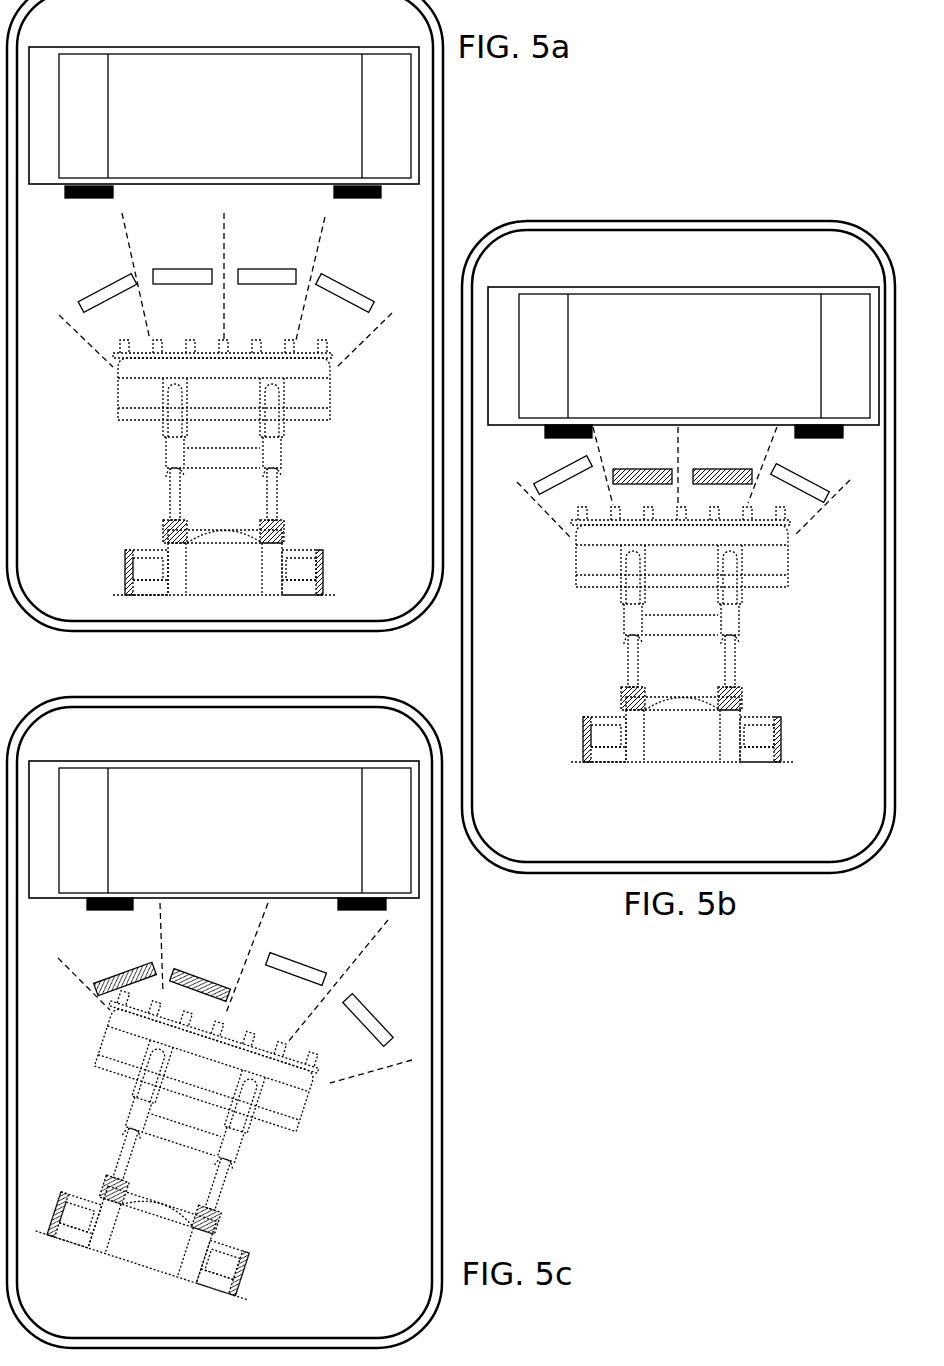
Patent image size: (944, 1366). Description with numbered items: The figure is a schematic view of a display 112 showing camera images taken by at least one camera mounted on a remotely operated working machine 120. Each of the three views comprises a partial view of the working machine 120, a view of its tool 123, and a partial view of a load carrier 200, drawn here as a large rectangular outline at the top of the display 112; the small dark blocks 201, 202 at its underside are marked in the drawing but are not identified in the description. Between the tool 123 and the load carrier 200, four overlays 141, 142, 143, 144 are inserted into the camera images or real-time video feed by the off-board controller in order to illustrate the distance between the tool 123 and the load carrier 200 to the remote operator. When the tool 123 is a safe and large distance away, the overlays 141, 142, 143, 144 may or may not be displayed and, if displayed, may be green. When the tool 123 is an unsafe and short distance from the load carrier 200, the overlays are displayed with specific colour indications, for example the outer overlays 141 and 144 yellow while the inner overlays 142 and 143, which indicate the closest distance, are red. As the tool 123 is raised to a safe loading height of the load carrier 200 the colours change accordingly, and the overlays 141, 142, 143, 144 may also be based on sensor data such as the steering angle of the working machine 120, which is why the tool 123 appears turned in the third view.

In FIG. 5a, the display 112 is at (448, 210).
In FIG. 5b, the display 112 is at (732, 220).
In FIG. 5c, the display 112 is at (443, 1012).
In FIG. 5a, the load carrier 200 is at (245, 47).
In FIG. 5b, the load carrier 200 is at (722, 286).
In FIG. 5c, the load carrier 200 is at (231, 760).
In FIG. 5a, the first camera 201 is at (107, 185).
In FIG. 5b, the first camera 201 is at (577, 423).
In FIG. 5c, the first camera 201 is at (120, 898).
In FIG. 5a, the second camera 202 is at (343, 184).
In FIG. 5b, the second camera 202 is at (815, 423).
In FIG. 5c, the second camera 202 is at (358, 898).
In FIG. 5a, the overlay 141 is at (107, 285).
In FIG. 5b, the overlay 141 is at (552, 472).
In FIG. 5c, the overlay 141 is at (125, 970).
In FIG. 5a, the overlay 142 is at (203, 268).
In FIG. 5b, the overlay 142 is at (662, 468).
In FIG. 5c, the overlay 142 is at (192, 973).
In FIG. 5a, the overlay 143 is at (288, 268).
In FIG. 5b, the overlay 143 is at (743, 468).
In FIG. 5c, the overlay 143 is at (292, 958).
In FIG. 5a, the overlay 144 is at (343, 290).
In FIG. 5b, the overlay 144 is at (802, 478).
In FIG. 5c, the overlay 144 is at (375, 1015).
In FIG. 5a, the tool 123 is at (207, 406).
In FIG. 5b, the tool 123 is at (661, 571).
In FIG. 5c, the tool 123 is at (191, 1084).
In FIG. 5a, the working machine 120 is at (206, 576).
In FIG. 5b, the working machine 120 is at (657, 748).
In FIG. 5c, the working machine 120 is at (134, 1244).